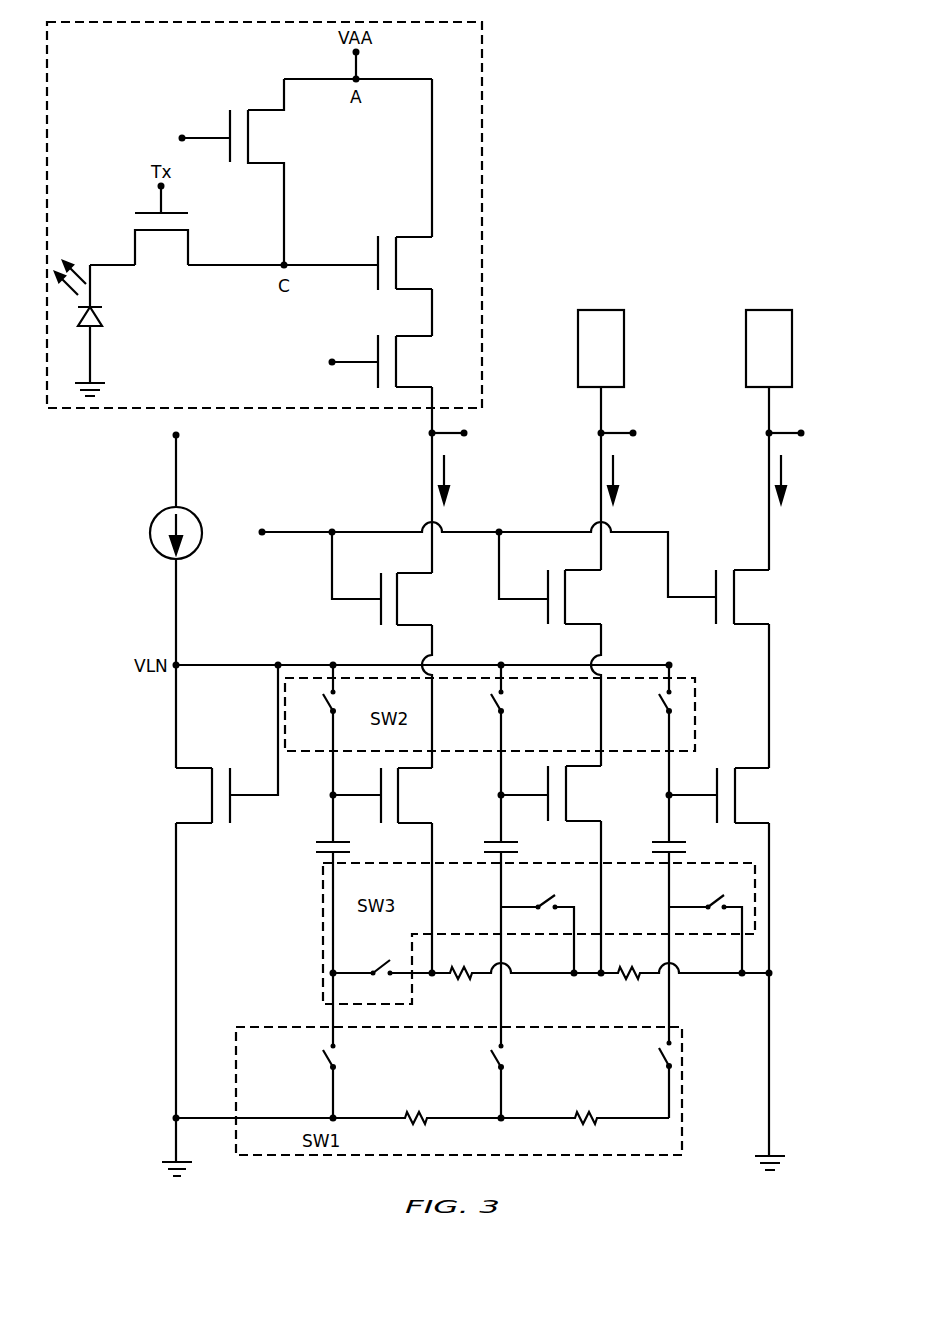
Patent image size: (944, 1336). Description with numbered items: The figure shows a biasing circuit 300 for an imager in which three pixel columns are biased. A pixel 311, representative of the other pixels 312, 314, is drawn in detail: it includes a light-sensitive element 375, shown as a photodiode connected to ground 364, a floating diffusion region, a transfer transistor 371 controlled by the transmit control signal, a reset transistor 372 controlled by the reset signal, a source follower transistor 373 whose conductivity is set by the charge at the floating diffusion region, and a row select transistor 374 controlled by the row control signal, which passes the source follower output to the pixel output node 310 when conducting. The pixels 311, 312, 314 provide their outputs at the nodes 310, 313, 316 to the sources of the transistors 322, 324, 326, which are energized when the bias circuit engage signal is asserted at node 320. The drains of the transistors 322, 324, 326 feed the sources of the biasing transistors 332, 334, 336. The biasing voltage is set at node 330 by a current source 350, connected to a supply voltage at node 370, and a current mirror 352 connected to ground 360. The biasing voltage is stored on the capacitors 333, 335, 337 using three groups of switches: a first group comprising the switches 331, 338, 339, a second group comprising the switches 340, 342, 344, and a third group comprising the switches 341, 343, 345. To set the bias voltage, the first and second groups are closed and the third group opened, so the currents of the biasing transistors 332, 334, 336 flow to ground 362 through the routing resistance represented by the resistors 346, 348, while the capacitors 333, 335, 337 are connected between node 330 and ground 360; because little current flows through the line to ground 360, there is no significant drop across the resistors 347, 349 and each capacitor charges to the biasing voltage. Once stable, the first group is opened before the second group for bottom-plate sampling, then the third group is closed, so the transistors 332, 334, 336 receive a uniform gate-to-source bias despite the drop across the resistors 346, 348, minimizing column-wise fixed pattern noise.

The biasing circuit 300 is at (746, 34).
The pixel 311 is at (482, 186).
The reset transistor 372 is at (265, 112).
The transfer transistor 371 is at (135, 248).
The source follower transistor 373 is at (413, 241).
The row select transistor 374 is at (413, 340).
The light-sensitive element 375 is at (101, 316).
The ground 364 is at (97, 383).
The pixel 312 is at (601, 310).
The pixel 314 is at (769, 310).
The pixel output node 310 is at (428, 434).
The pixel output node 313 is at (597, 434).
The pixel output node 316 is at (765, 434).
The supply voltage node 370 is at (172, 436).
The current source 350 is at (150, 534).
The node 320 is at (264, 529).
The transistor 322 is at (414, 578).
The transistor 324 is at (582, 576).
The transistor 326 is at (751, 576).
The node 330 is at (279, 662).
The current mirror 352 is at (212, 770).
The switch 340 is at (325, 702).
The switch 342 is at (493, 702).
The switch 344 is at (661, 702).
The biasing transistor 332 is at (415, 772).
The biasing transistor 334 is at (583, 770).
The biasing transistor 336 is at (751, 772).
The capacitor 333 is at (327, 840).
The capacitor 335 is at (495, 840).
The capacitor 337 is at (663, 840).
The switch 341 is at (383, 963).
The switch 343 is at (548, 900).
The switch 345 is at (717, 900).
The resistor 346 is at (463, 977).
The resistor 348 is at (630, 977).
The switch 331 is at (327, 1060).
The switch 338 is at (495, 1060).
The switch 339 is at (664, 1057).
The resistor 347 is at (417, 1122).
The resistor 349 is at (583, 1122).
The ground 360 is at (190, 1162).
The ground 362 is at (783, 1156).